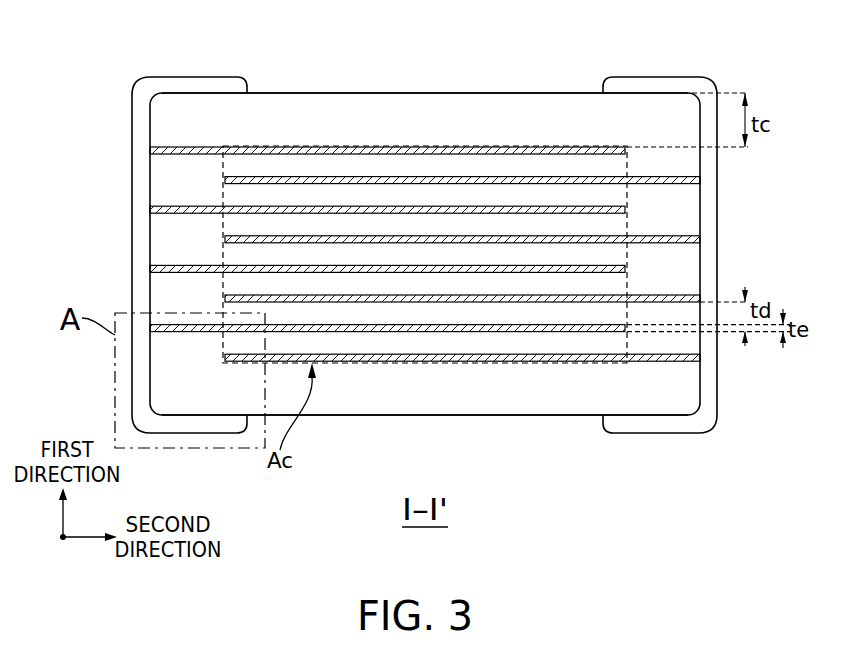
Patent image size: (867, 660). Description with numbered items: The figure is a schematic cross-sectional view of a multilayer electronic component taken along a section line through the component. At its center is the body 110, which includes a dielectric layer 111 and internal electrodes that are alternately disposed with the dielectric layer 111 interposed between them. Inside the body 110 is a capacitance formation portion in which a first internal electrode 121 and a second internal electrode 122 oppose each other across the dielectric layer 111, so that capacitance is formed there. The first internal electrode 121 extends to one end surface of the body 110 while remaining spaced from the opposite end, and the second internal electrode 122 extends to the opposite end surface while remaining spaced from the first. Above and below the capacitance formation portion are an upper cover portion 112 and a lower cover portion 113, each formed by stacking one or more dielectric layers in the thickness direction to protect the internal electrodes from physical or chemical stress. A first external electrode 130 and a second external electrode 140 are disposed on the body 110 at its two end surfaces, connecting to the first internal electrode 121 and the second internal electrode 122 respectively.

The body 110 is at (405, 93).
The dielectric layer 111 is at (470, 342).
The upper cover portion 112 is at (543, 113).
The lower cover portion 113 is at (543, 397).
The first internal electrode 121 is at (360, 330).
The second internal electrode 122 is at (403, 358).
The first external electrode 130 is at (188, 83).
The second external electrode 140 is at (660, 82).